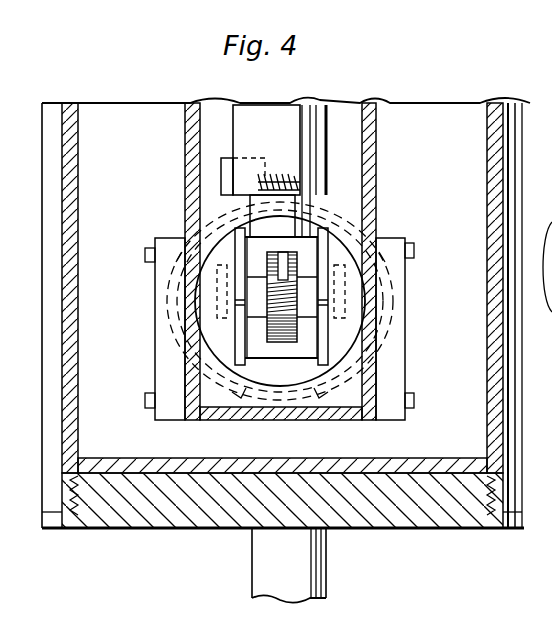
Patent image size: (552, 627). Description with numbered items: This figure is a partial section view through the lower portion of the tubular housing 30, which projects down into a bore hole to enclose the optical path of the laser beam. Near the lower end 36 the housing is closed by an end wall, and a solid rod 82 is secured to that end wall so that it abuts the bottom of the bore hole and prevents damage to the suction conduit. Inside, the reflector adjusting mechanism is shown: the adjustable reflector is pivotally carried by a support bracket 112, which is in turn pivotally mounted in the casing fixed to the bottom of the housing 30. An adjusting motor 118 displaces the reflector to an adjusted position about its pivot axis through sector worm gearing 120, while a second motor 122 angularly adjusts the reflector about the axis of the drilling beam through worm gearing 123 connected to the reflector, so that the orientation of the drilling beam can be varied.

The tubular housing 30 is at (487, 153).
The lower end 36 is at (197, 500).
The solid rod 82 is at (316, 577).
The support bracket 112 is at (378, 173).
The adjusting motor 118 is at (302, 123).
The sector worm gearing 120 is at (263, 330).
The motor 122 is at (221, 175).
The worm gearing 123 is at (282, 170).